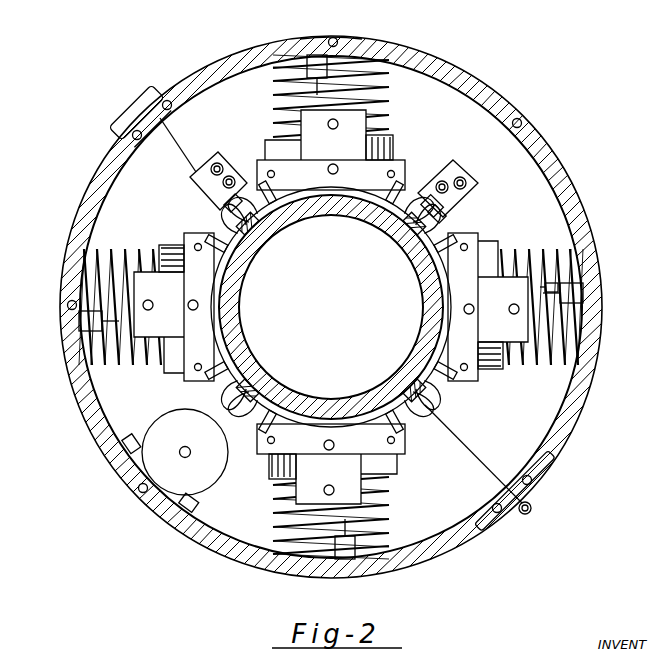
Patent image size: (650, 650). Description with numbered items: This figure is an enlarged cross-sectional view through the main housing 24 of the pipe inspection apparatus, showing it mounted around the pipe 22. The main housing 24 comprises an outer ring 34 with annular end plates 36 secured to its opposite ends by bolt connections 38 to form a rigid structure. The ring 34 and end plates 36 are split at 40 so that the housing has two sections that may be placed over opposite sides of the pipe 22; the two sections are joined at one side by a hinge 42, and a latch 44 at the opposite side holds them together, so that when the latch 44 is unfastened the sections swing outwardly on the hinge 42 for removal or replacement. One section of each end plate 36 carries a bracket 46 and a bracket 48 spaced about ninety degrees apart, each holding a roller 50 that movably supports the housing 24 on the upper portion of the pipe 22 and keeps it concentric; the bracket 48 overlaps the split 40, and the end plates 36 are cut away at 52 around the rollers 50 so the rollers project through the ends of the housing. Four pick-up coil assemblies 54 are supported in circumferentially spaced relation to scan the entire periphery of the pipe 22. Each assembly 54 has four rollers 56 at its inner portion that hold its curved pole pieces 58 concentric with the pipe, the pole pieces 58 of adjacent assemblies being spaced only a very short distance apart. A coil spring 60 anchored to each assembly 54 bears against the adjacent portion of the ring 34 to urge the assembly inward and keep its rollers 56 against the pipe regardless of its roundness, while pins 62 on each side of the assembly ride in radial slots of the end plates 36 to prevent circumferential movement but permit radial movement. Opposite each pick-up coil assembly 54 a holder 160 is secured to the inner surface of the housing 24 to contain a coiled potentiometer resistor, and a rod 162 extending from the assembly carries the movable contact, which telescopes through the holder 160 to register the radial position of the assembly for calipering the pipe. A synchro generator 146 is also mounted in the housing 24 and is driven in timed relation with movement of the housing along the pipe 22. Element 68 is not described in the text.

The pipe 22 is at (430, 294).
The main housing 24 is at (68, 204).
The outer ring 34 is at (262, 62).
The annular end plates 36 is at (209, 118).
The bolt connections 38 is at (336, 40).
The split 40 is at (178, 145).
The hinge 42 is at (537, 488).
The latch 44 is at (142, 108).
The bracket 46 is at (455, 168).
The bracket 48 is at (200, 170).
The rollers 50 is at (224, 209).
The cut away 52 is at (419, 190).
The pick-up coil assemblies 54 is at (262, 158).
The rollers 56 is at (290, 226).
The curved pole pieces 58 is at (264, 244).
The coil spring 60 is at (280, 86).
The pins 62 is at (195, 300).
The guide block 68 is at (397, 140).
The synchro generator 146 is at (171, 446).
The holder 160 is at (318, 56).
The rod 162 is at (562, 284).